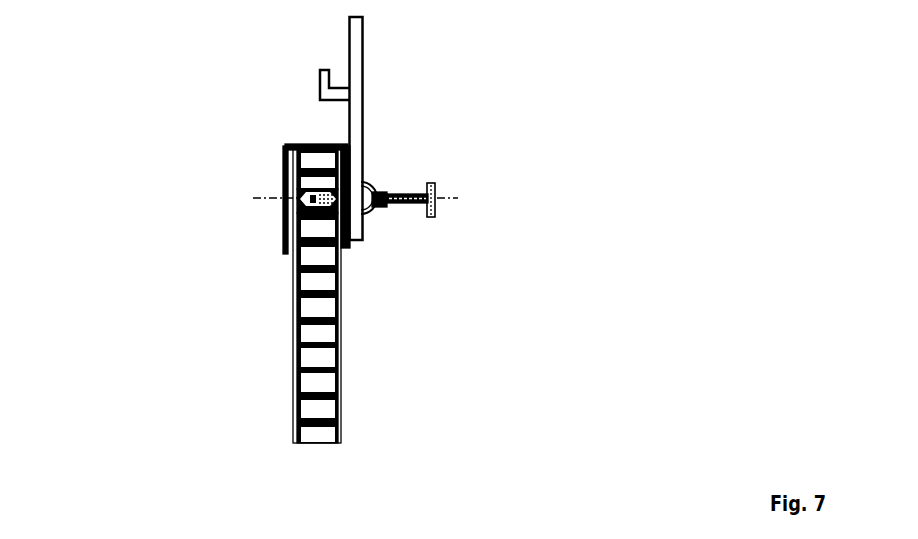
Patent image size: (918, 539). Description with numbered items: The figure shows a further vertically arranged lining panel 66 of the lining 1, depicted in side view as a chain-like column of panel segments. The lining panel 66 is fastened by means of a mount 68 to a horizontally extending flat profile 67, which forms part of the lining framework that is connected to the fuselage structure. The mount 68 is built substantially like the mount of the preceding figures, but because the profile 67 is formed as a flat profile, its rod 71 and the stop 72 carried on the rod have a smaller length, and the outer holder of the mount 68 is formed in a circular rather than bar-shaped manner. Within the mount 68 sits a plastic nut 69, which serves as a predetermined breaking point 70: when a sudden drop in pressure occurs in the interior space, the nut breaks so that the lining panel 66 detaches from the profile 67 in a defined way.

The lining 1 is at (112, 115).
The lining panel 66 is at (295, 343).
The profile 67 is at (333, 95).
The mount 68 is at (240, 208).
The plastic nut 69 is at (365, 185).
The predetermined breaking point 70 is at (404, 250).
The rod 71 is at (404, 194).
The stop 72 is at (437, 207).